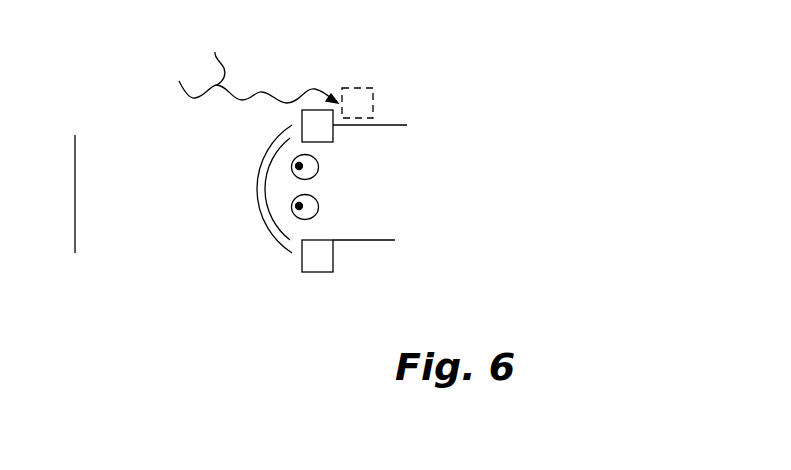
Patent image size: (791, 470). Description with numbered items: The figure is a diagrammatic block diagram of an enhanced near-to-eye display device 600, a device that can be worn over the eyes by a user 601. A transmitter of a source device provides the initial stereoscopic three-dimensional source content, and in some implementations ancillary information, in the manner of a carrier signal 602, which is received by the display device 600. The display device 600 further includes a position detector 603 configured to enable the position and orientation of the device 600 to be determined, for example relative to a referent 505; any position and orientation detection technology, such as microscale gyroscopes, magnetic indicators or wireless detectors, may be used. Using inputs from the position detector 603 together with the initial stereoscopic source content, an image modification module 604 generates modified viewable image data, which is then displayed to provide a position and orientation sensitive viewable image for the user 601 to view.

The referent location 505 is at (75, 238).
The enhanced near-to-eye display device 600 is at (475, 63).
The user 601 is at (320, 187).
The carrier signal 602 is at (276, 72).
The position detector 603 is at (333, 133).
The image modification module 604 is at (333, 262).